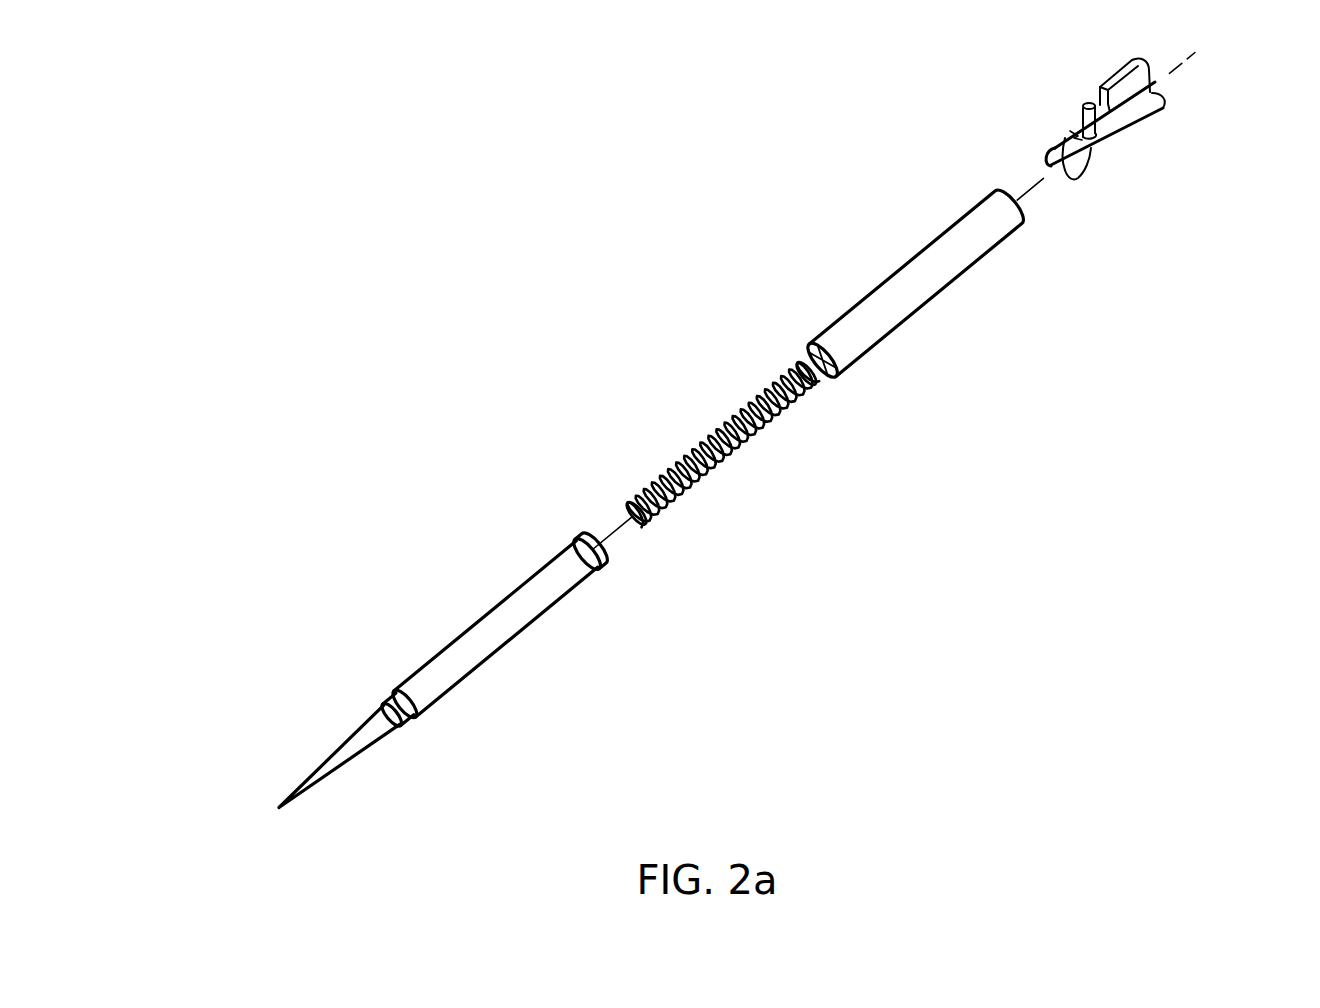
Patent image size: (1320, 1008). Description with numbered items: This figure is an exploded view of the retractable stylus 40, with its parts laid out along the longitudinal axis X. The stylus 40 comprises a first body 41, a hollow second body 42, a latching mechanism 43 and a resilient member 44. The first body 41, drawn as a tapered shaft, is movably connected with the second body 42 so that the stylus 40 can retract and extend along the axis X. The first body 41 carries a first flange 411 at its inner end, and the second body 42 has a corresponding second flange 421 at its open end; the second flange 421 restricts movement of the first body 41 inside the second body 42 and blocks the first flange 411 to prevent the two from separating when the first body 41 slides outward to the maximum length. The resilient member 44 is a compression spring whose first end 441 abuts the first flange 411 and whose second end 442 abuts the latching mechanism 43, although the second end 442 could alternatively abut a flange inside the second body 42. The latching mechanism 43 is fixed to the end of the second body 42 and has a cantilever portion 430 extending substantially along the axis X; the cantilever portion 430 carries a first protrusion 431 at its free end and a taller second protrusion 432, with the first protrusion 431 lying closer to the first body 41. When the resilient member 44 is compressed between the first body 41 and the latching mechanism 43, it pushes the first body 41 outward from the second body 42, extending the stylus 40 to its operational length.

The stylus 40 is at (213, 166).
The first body 41 is at (503, 615).
The first flange 411 is at (582, 537).
The resilient member 44 is at (733, 455).
The first end 441 is at (632, 527).
The second end 442 is at (806, 352).
The second body 42 is at (932, 303).
The second flange 421 is at (832, 378).
The latching mechanism 43 is at (1107, 104).
The cantilever portion 430 is at (1112, 113).
The first protrusion 431 is at (1088, 102).
The second protrusion 432 is at (1115, 68).
The longitudinal axis X is at (1172, 72).